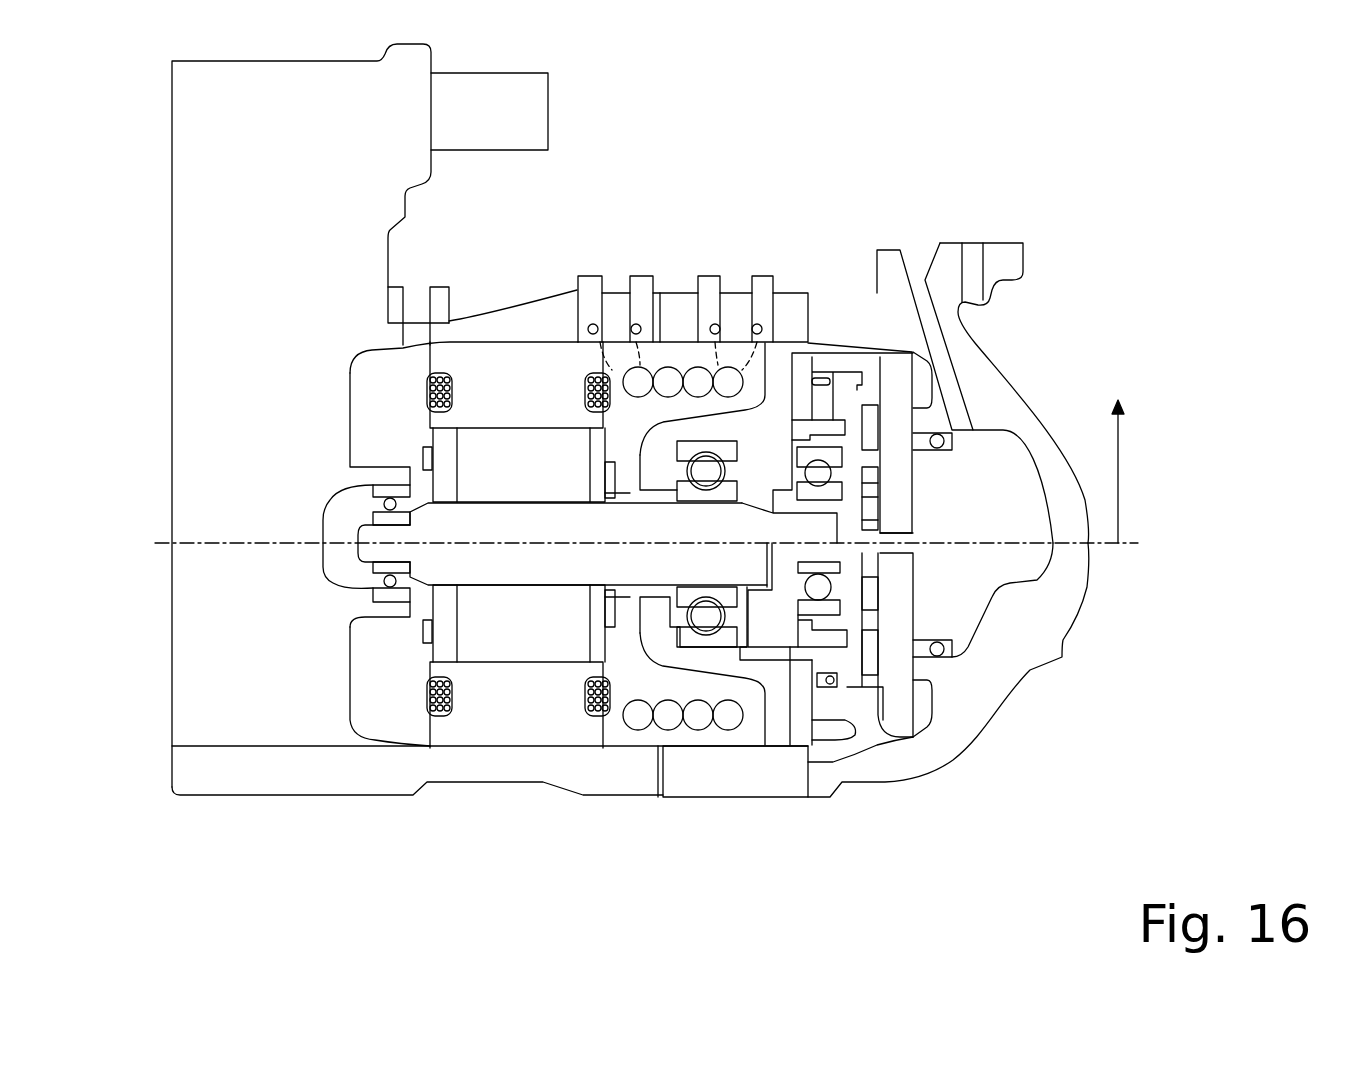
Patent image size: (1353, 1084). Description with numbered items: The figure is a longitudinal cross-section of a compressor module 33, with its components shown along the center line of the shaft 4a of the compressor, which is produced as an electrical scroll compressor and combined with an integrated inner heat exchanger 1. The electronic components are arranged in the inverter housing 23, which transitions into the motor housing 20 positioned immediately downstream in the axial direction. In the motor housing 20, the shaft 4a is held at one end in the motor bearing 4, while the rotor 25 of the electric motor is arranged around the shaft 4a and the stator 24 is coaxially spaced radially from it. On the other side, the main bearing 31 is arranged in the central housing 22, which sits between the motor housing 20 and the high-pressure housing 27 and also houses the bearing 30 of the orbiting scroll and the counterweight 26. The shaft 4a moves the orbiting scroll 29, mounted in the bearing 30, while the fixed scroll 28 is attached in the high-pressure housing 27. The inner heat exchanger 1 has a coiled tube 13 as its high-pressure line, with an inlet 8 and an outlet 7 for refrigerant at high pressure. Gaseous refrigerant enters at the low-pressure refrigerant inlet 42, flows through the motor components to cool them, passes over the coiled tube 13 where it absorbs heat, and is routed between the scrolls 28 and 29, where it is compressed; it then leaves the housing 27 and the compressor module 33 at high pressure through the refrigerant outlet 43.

The inner heat exchanger 1 is at (738, 718).
The motor bearing 4 is at (390, 500).
The shaft 4a is at (443, 550).
The outlet 7 is at (620, 278).
The inlet 8 is at (735, 275).
The coiled tube 13 is at (695, 718).
The motor housing 20 is at (595, 778).
The central housing 22 is at (707, 778).
The inverter housing 23 is at (248, 357).
The stator 24 is at (505, 723).
The rotor 25 is at (483, 625).
The counterweight 26 is at (773, 630).
The high-pressure housing 27 is at (940, 757).
The fixed scroll 28 is at (902, 602).
The orbiting scroll 29 is at (852, 485).
The bearing of the orbiting scroll 30 is at (805, 453).
The main bearing 31 is at (732, 453).
The compressor module 33 is at (1088, 190).
The refrigerant inlet 42 is at (417, 302).
The refrigerant outlet 43 is at (913, 252).